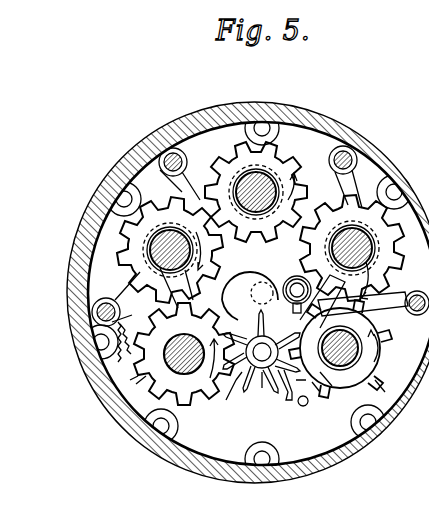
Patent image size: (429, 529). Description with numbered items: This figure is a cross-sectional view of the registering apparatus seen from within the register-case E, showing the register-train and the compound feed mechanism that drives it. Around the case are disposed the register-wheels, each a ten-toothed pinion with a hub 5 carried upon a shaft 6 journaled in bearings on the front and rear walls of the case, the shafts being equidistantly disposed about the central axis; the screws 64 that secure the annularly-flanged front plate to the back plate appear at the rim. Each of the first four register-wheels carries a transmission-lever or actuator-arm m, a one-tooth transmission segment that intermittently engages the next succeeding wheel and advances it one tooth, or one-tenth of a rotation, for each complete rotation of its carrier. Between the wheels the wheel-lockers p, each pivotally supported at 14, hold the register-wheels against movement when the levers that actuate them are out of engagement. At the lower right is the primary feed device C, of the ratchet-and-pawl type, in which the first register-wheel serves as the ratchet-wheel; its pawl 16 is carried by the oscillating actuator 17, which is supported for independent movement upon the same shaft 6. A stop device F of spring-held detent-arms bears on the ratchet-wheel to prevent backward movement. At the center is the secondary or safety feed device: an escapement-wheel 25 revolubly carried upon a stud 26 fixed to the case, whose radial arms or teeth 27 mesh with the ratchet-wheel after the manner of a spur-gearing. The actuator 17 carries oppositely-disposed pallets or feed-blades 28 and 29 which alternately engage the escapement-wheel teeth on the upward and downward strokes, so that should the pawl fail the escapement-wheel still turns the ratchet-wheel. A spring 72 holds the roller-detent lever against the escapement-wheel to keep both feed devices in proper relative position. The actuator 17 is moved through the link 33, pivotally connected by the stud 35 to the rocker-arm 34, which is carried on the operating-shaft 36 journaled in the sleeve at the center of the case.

The hub 5 is at (170, 235).
The shaft 6 is at (148, 250).
The pivotal support 14 is at (186, 158).
The pawl 16 is at (326, 396).
The actuator 17 is at (290, 408).
The escapement-wheel 25 is at (239, 388).
The stud 26 is at (261, 351).
The radial arms or peripheral teeth 27 is at (382, 372).
The pallet or feed-blade 28 is at (345, 295).
The pallet or feed-blade 29 is at (264, 389).
The link 33 is at (294, 310).
The rocker-arm 34 is at (244, 295).
The stud 35 is at (297, 290).
The shaft 36 is at (244, 276).
The screws 64 is at (121, 202).
The spring 72 is at (134, 338).
The transmission-lever or actuator-arm m is at (260, 273).
The wheel-locker p is at (372, 178).
The register-case E is at (248, 292).
The primary feed device C is at (340, 356).
The stop device F is at (346, 301).